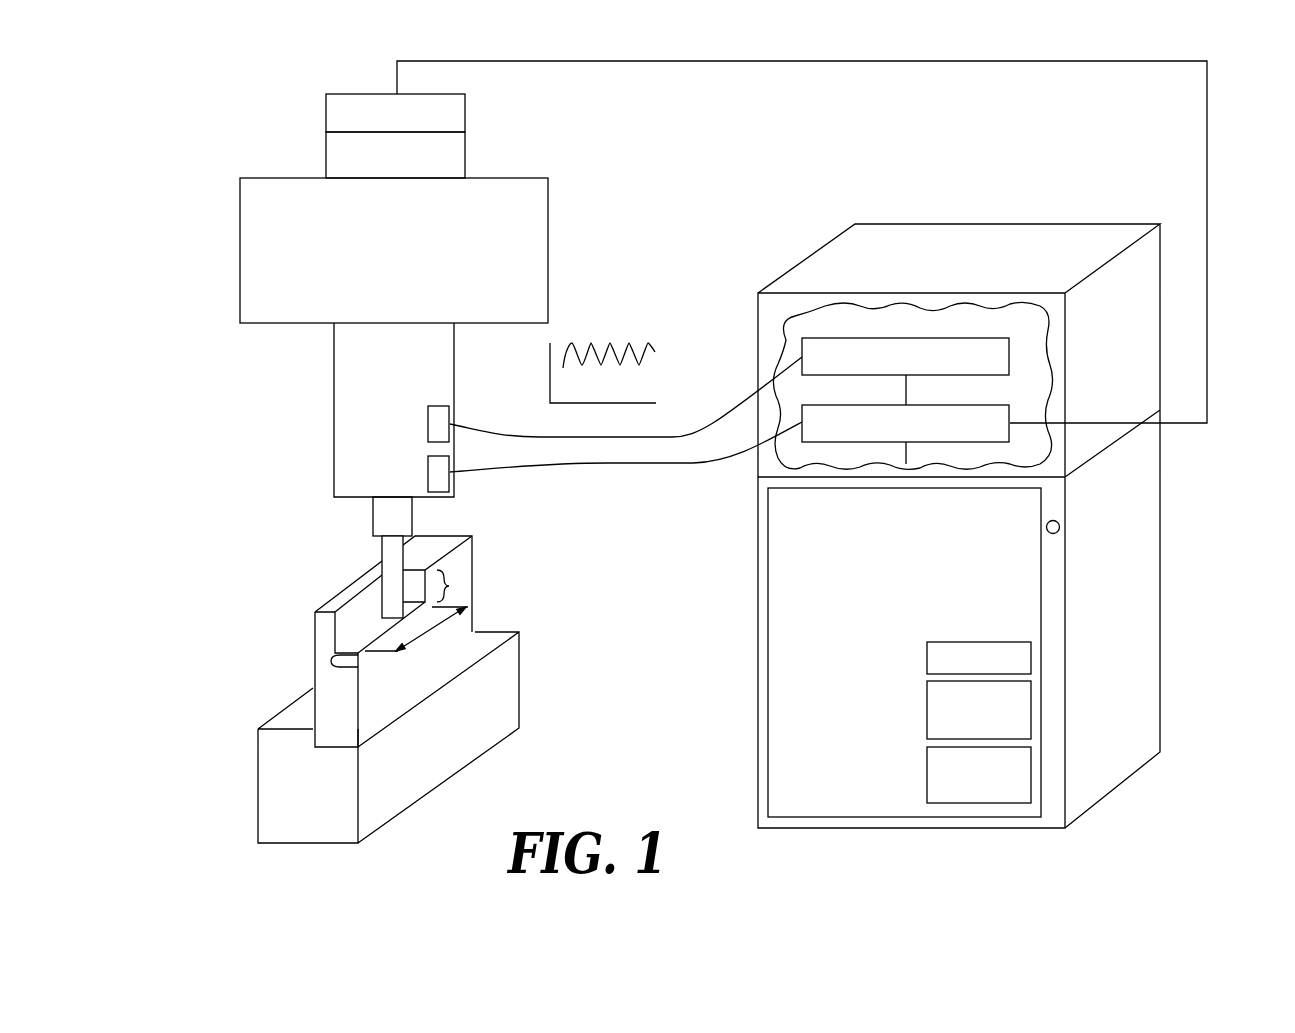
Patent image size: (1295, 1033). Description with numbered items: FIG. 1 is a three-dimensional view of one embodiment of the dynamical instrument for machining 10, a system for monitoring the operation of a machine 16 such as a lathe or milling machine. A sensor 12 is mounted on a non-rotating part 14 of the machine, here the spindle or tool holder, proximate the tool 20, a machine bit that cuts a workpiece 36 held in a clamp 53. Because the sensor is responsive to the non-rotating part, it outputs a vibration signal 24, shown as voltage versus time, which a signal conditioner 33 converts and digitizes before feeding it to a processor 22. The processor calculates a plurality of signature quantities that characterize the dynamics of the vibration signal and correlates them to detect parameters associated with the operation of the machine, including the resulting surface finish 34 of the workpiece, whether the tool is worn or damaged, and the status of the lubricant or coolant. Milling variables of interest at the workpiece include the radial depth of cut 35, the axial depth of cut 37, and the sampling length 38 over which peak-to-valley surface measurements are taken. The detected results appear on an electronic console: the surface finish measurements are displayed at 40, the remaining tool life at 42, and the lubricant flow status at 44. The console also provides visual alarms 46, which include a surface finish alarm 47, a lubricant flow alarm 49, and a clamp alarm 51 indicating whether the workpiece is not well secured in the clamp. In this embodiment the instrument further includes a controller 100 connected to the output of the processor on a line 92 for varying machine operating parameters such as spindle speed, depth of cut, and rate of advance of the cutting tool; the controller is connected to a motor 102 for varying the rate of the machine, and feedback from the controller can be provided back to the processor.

The dynamical instrument for machining 10 is at (1279, 97).
The machine 16 is at (274, 112).
The controller 100 is at (462, 113).
The motor 102 is at (462, 157).
The non-rotating part 14 is at (252, 212).
The sensor 12 is at (432, 424).
The visual alarms / acoustic sensor 46 is at (432, 476).
The vibration signal 24 is at (615, 312).
The tool 20 is at (383, 557).
The surface finish 34 is at (370, 633).
The radial depth of cut 35 is at (340, 672).
The workpiece 36 is at (475, 618).
The axial depth of cut 37 is at (454, 586).
The sampling length 38 is at (416, 629).
The clamp 53 is at (497, 710).
The signal conditioner 33 is at (1010, 358).
The processor 22 is at (1006, 412).
The line 92 is at (1207, 178).
The surface finish display 40 is at (770, 504).
The lubricant flow display 44 is at (770, 597).
The remaining life display 42 is at (770, 688).
The clamp alarm 51 is at (1032, 658).
The surface finish alarm 47 is at (1030, 712).
The lubricant flow alarm 49 is at (1030, 783).